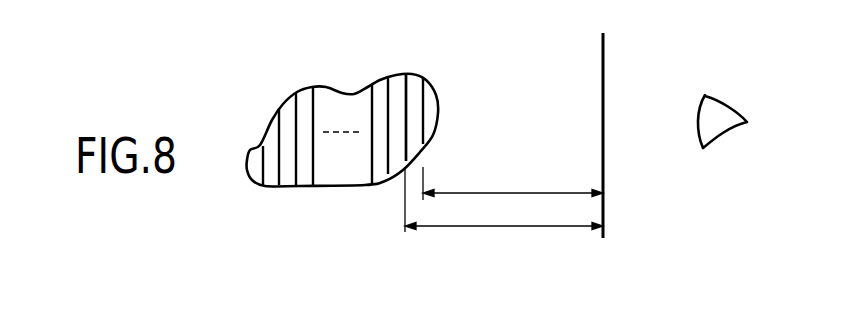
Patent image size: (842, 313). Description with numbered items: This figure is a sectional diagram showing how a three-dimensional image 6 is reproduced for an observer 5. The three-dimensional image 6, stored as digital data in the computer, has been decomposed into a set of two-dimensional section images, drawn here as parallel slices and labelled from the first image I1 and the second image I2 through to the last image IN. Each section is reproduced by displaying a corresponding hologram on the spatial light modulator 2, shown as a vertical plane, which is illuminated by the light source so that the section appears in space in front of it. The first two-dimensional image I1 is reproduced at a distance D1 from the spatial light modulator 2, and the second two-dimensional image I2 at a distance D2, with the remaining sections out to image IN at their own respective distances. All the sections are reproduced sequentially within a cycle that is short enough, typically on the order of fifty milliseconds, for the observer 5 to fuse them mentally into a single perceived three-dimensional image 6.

The three-dimensional image 6 is at (338, 186).
The two-dimensional image IN is at (261, 156).
The two-dimensional image I1 is at (423, 90).
The two-dimensional image I2 is at (409, 84).
The spatial light modulator 2 is at (605, 105).
The observer 5 is at (720, 115).
The distance D1 is at (513, 183).
The distance D2 is at (504, 200).